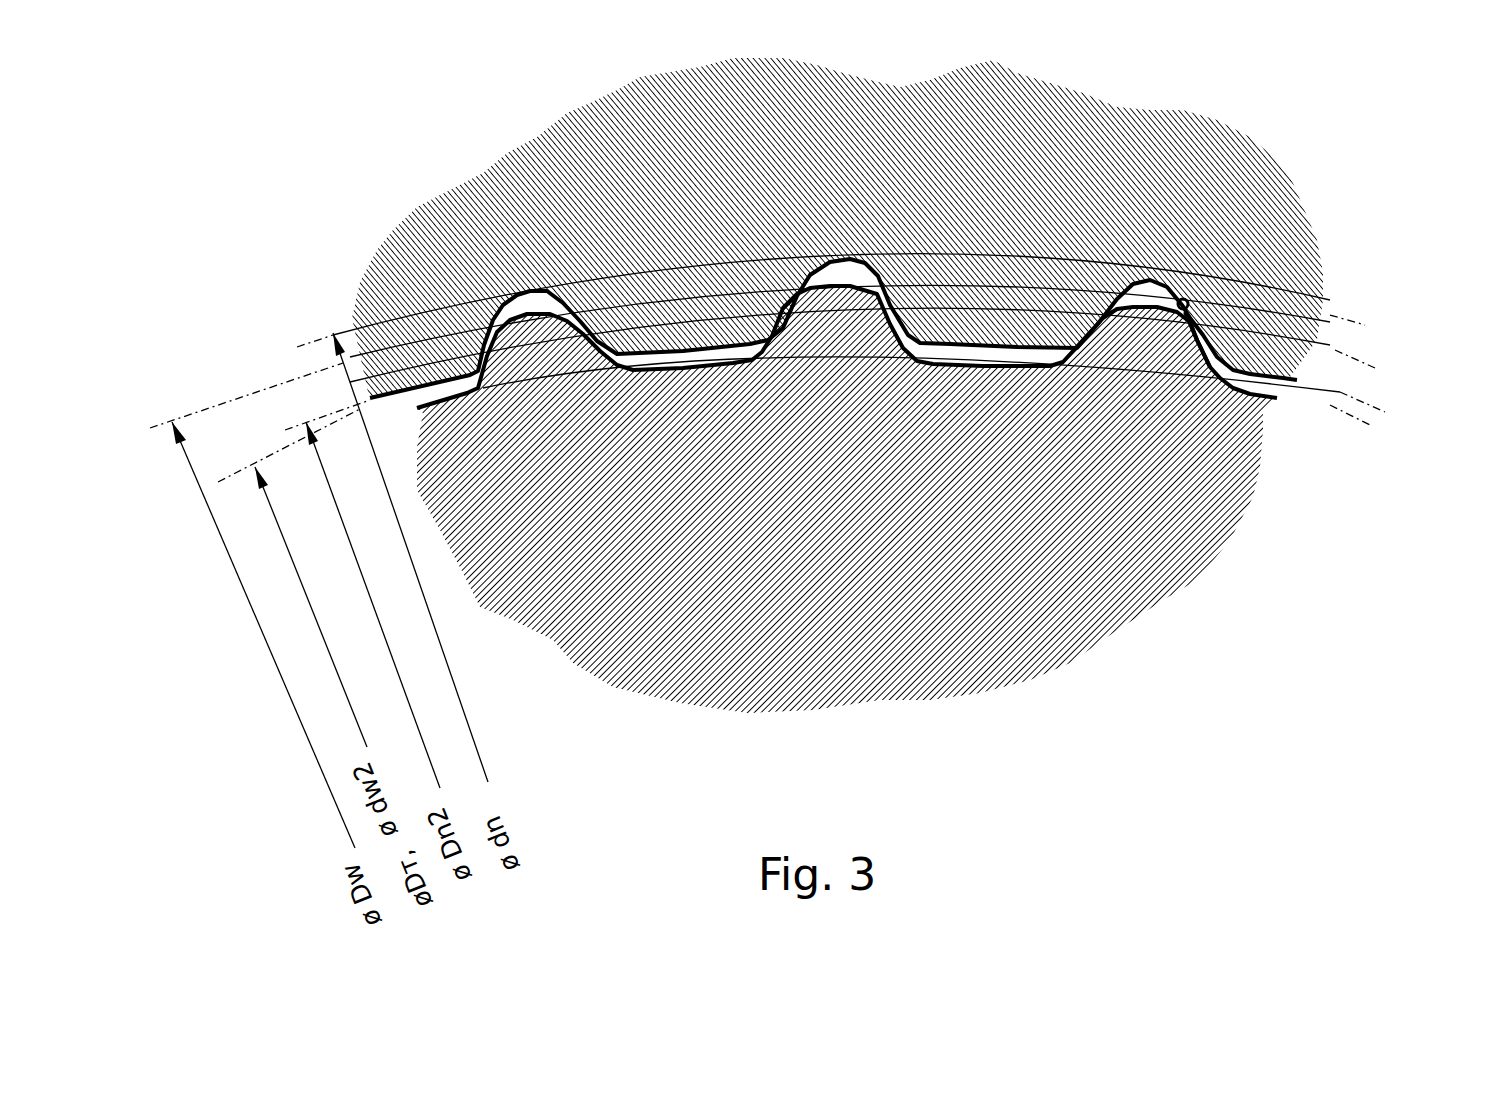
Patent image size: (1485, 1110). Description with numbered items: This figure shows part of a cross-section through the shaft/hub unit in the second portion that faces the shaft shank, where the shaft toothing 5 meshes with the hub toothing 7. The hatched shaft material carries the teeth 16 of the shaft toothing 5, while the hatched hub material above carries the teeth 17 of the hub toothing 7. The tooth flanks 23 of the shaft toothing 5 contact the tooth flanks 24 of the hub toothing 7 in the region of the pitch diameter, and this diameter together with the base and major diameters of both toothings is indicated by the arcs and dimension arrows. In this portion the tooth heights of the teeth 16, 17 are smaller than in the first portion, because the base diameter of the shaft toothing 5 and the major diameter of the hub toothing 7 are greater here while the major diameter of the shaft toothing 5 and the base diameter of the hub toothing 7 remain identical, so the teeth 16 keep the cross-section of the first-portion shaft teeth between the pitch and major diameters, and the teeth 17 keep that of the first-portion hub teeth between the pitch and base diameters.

The shaft toothing 5 is at (1097, 562).
The hub toothing 7 is at (1082, 203).
The teeth of the shaft toothing 16 is at (1140, 362).
The teeth of the hub toothing 17 is at (990, 327).
The tooth flanks of the shaft toothing 23 is at (1196, 325).
The tooth flanks of the hub toothing 24 is at (1181, 306).